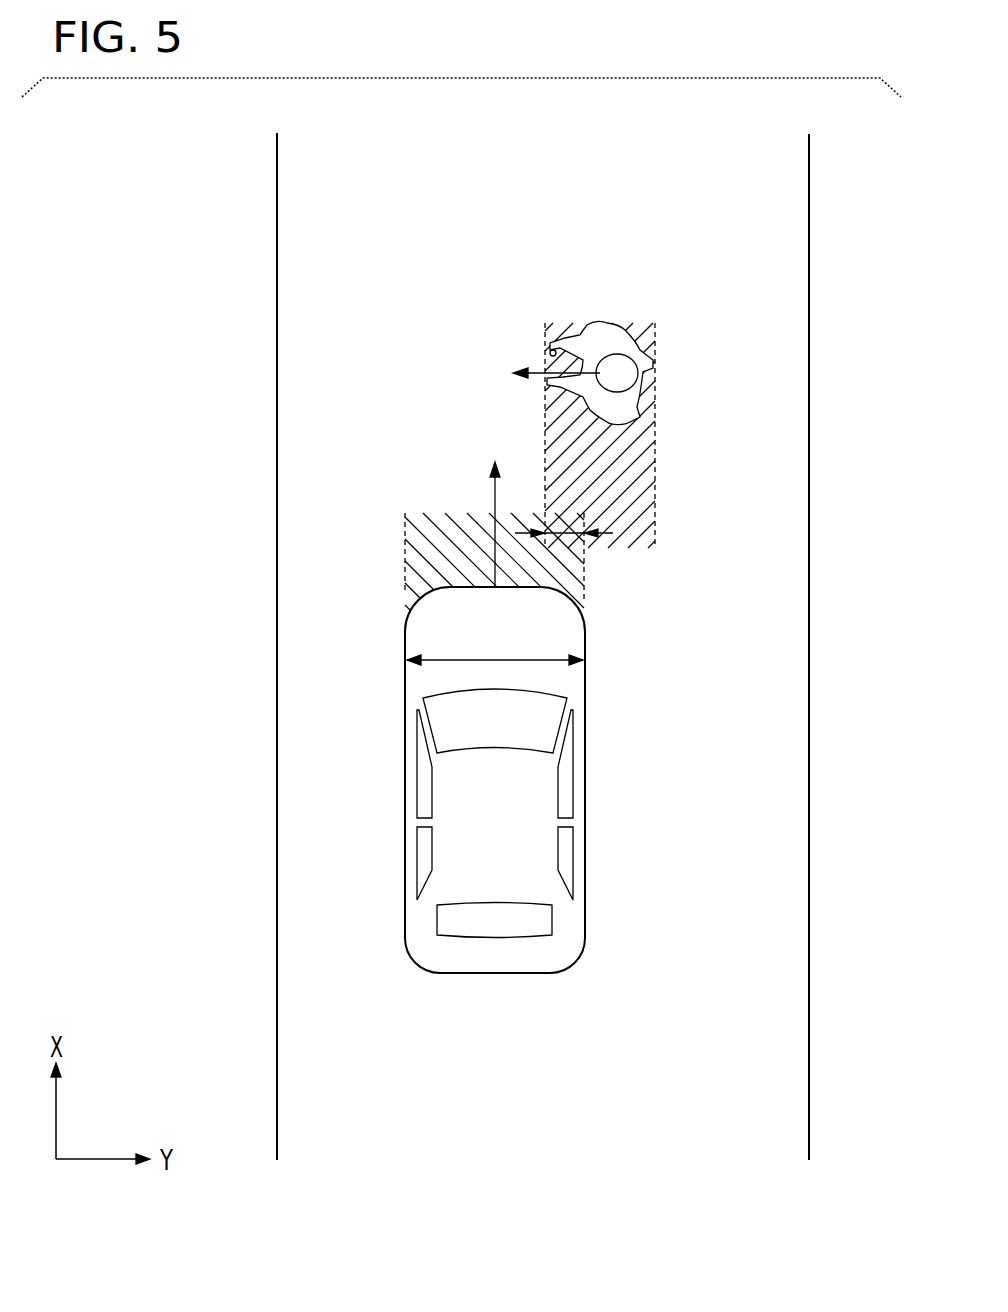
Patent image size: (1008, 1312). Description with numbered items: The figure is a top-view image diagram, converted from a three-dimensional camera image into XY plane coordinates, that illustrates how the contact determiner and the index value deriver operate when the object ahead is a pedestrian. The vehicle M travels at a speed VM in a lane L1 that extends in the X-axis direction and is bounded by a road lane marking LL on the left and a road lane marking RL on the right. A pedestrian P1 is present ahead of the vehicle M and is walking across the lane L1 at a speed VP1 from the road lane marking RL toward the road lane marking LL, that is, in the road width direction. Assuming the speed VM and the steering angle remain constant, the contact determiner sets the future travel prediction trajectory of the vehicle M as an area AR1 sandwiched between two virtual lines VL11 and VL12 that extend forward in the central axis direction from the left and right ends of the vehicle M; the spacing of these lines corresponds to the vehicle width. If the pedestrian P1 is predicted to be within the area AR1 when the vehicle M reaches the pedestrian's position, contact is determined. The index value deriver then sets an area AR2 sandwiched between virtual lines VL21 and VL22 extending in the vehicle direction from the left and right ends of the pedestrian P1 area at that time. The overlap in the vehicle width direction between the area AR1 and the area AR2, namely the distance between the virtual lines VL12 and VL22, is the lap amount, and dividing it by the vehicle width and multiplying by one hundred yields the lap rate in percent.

The vehicle M is at (587, 778).
The pedestrian P1 is at (607, 322).
The speed of the pedestrian VP1 is at (530, 372).
The speed of the vehicle VM is at (493, 500).
The area sandwiched between virtual lines VL11 and VL12 AR1 is at (414, 554).
The area sandwiched between virtual lines VL21 and VL22 AR2 is at (645, 513).
The virtual line VL11 is at (405, 576).
The virtual line VL12 is at (587, 575).
The virtual line VL21 is at (656, 429).
The virtual line VL22 is at (545, 433).
The road lane marking LL is at (277, 1081).
The road lane marking RL is at (810, 1080).
The lane L1 is at (558, 1159).